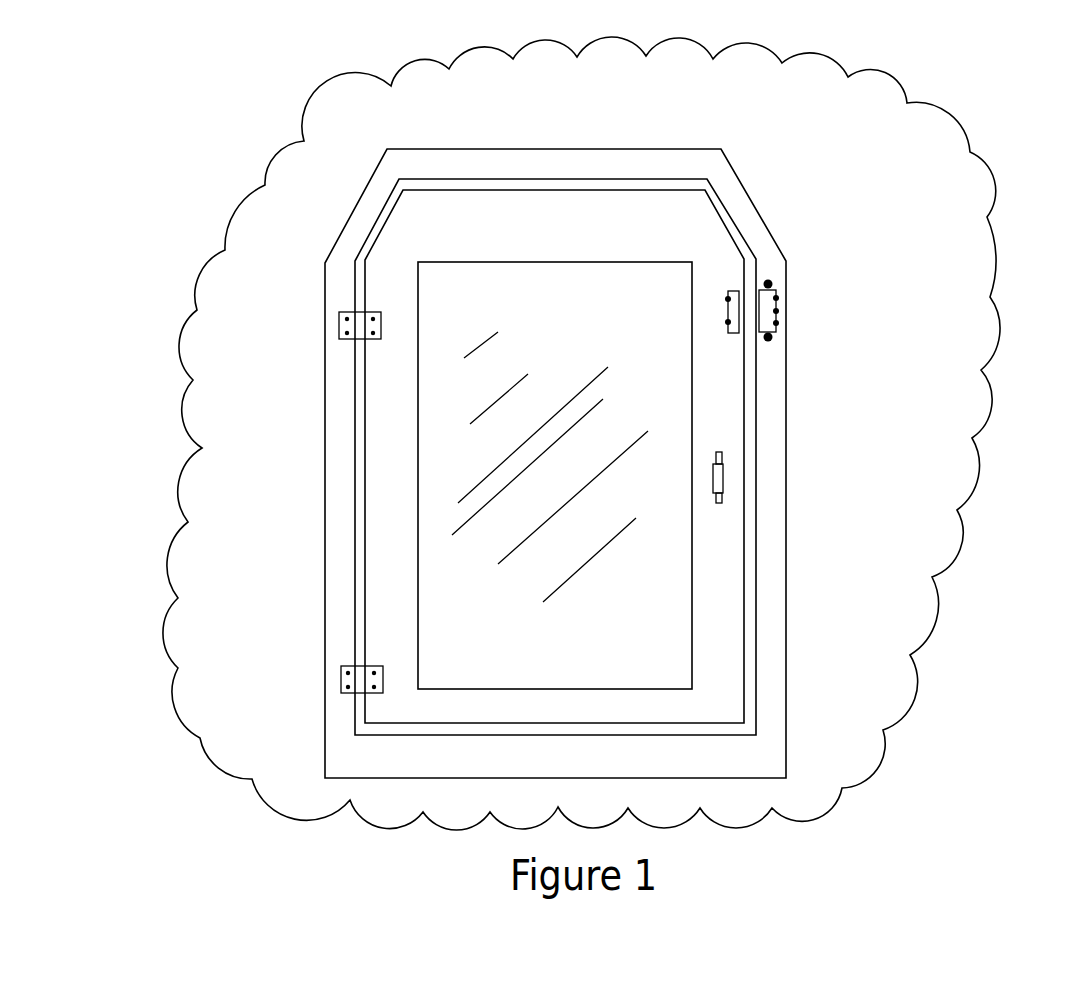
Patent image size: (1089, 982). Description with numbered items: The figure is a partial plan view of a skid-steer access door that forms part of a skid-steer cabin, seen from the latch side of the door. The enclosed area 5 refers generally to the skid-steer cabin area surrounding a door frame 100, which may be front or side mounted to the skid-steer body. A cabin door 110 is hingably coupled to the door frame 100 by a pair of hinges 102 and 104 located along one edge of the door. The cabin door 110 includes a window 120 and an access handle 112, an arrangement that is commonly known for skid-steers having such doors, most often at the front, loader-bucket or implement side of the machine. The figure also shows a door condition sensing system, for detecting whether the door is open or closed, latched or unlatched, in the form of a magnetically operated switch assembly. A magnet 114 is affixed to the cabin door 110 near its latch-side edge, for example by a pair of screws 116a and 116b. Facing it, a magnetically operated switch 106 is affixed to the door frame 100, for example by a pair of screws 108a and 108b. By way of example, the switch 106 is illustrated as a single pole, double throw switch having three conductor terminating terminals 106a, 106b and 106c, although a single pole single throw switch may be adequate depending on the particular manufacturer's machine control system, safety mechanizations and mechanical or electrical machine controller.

The enclosed area 5 is at (994, 181).
The door frame 100 is at (727, 183).
The hinge 102 is at (339, 323).
The hinge 104 is at (341, 678).
The magnetically operated switch 106 is at (776, 331).
The conductor terminating terminal 106a is at (776, 298).
The conductor terminating terminal 106b is at (776, 311).
The conductor terminating terminal 106c is at (776, 323).
The screw 108a is at (768, 284).
The screw 108b is at (768, 337).
The cabin door 110 is at (697, 244).
The access handle 112 is at (723, 487).
The magnet 114 is at (733, 334).
The screw 116a is at (728, 299).
The screw 116b is at (728, 322).
The window 120 is at (629, 629).